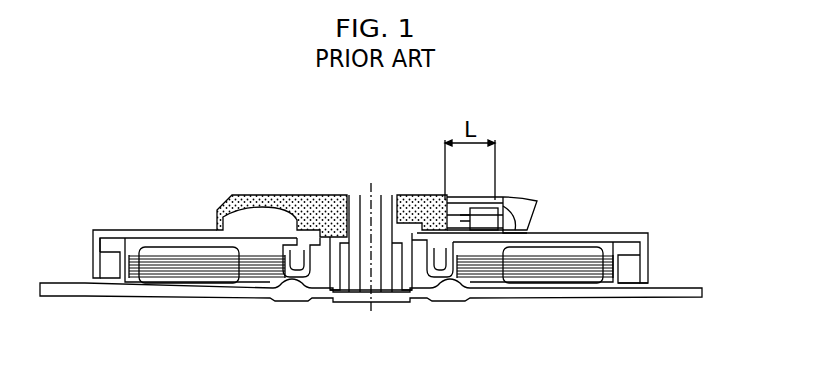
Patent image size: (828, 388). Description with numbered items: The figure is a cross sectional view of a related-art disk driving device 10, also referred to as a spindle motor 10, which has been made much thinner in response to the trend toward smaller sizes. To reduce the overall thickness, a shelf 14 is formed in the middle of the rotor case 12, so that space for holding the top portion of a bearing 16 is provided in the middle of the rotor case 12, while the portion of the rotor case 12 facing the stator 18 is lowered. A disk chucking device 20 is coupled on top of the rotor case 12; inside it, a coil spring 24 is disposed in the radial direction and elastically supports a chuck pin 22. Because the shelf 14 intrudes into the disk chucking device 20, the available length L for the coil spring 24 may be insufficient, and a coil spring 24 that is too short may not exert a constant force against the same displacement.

The disk driving device 10 is at (615, 192).
The rotor case 12 is at (176, 221).
The shelf 14 is at (425, 196).
The bearing 16 is at (333, 300).
The stator 18 is at (537, 305).
The disk chucking device 20 is at (276, 178).
The chuck pin 22 is at (540, 195).
The coil spring 24 is at (500, 203).